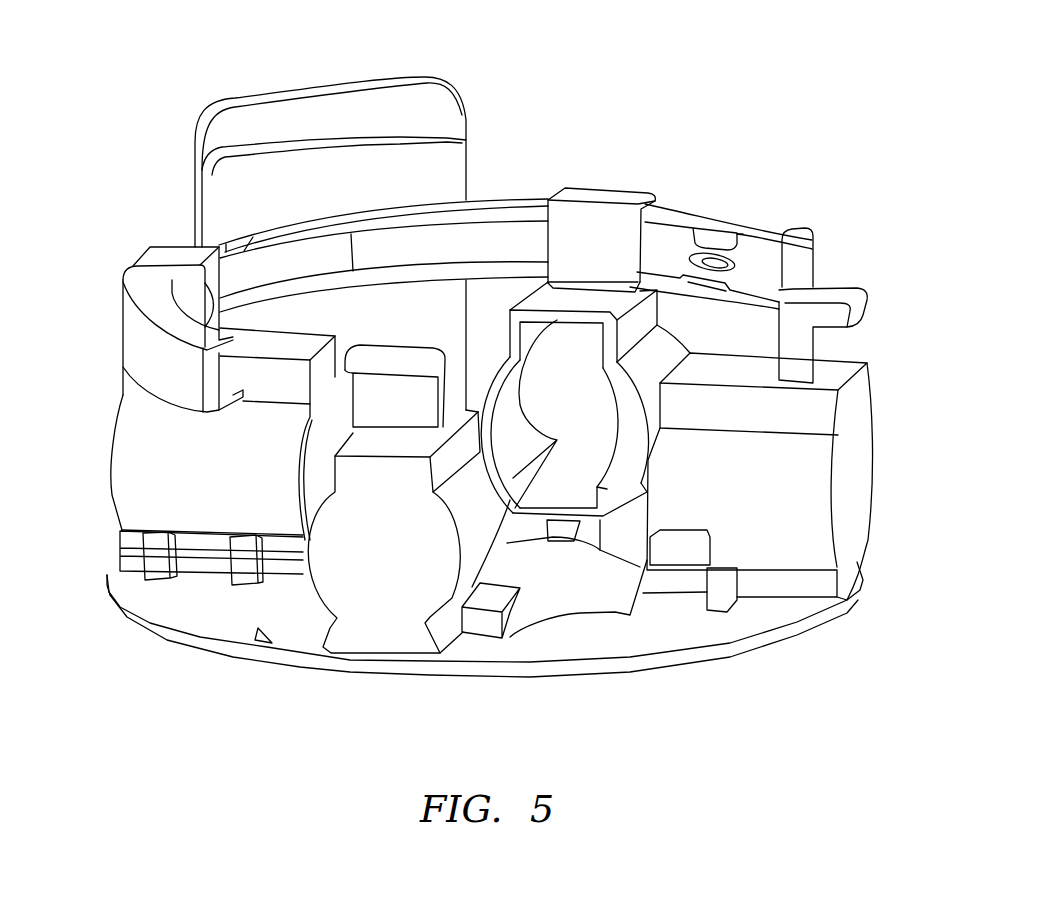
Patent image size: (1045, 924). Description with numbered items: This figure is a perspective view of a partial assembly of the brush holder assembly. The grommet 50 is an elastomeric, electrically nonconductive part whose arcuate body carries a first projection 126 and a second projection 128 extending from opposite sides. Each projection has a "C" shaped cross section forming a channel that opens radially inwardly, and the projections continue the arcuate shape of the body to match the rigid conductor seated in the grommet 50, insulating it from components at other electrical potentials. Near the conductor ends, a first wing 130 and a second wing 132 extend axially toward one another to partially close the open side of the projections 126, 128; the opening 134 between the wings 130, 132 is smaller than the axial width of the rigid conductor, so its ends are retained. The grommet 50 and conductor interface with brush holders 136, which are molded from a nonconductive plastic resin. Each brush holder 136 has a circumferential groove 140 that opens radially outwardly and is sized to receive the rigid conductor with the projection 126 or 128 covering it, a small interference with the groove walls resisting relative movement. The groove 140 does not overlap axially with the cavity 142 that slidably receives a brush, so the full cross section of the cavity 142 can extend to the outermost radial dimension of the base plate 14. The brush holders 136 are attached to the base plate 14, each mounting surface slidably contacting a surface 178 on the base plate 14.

The grommet 50 is at (243, 120).
The second projection 128 is at (523, 200).
The first wing 130 is at (193, 277).
The opening 134 is at (740, 258).
The second wing 132 is at (712, 277).
The first projection 126 is at (120, 330).
The groove 140 is at (842, 342).
The cavity 142 is at (598, 435).
The brush holder 136 is at (858, 493).
The base plate 14 is at (152, 627).
The surface 178 is at (262, 635).